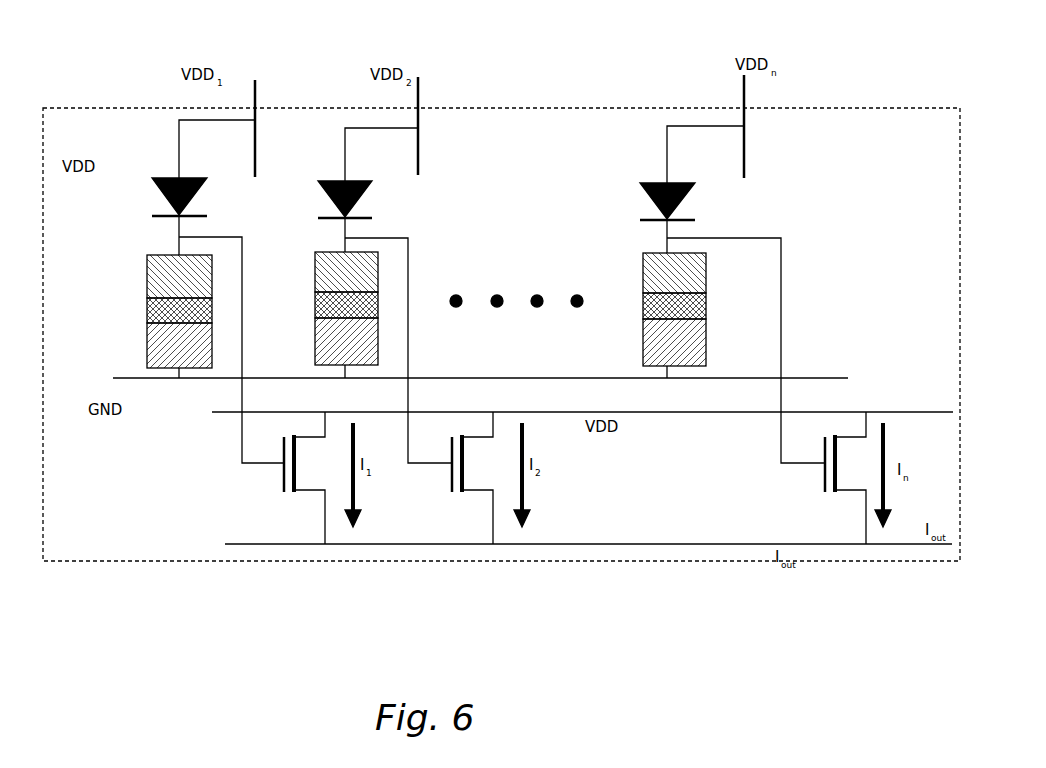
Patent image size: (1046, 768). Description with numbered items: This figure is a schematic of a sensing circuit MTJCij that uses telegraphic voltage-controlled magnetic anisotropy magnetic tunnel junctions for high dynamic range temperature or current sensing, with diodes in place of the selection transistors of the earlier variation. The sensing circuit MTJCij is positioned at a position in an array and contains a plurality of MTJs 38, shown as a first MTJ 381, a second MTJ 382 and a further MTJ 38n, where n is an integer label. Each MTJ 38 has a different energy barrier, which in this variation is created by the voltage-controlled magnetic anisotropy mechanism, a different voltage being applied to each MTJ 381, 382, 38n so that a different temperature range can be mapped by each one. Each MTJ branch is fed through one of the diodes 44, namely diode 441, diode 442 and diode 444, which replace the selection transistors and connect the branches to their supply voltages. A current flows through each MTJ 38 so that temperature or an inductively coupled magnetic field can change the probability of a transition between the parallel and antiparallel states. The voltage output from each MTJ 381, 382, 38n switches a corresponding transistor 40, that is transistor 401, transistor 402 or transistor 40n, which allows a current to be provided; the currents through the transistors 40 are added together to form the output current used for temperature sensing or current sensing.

The diode 44 is at (421, 147).
The diode of the first cell branch 441 is at (176, 178).
The diode of the second cell branch 442 is at (344, 181).
The diode of the n-th cell branch 444 is at (664, 183).
The magnetic tunnel junction 38 is at (417, 385).
The first magnetic tunnel junction 381 is at (184, 352).
The second magnetic tunnel junction 382 is at (318, 360).
The n-th magnetic tunnel junction 38n is at (692, 345).
The transistor 40 is at (522, 430).
The first transistor 401 is at (294, 495).
The second transistor 402 is at (456, 496).
The n-th transistor 40n is at (836, 496).
The sensing circuit MTJCij is at (518, 108).